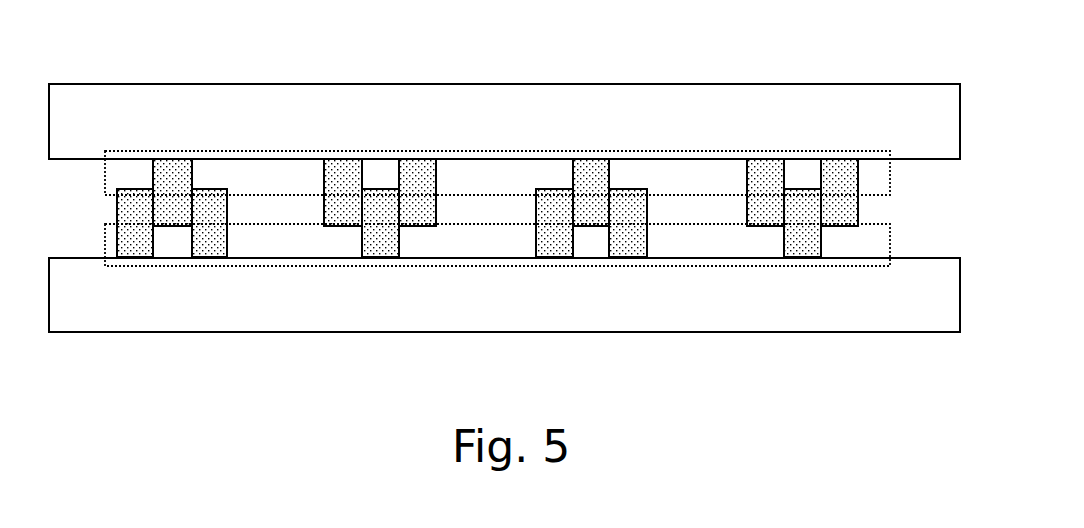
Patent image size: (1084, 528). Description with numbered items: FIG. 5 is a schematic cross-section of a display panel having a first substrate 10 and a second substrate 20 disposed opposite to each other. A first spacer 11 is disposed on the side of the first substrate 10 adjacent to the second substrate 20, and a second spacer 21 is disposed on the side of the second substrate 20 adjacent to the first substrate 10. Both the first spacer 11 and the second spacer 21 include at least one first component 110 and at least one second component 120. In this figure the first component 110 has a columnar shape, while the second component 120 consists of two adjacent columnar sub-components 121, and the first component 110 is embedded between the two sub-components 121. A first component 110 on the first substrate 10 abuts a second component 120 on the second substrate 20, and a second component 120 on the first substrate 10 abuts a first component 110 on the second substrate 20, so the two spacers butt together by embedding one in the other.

The first substrate 10 is at (929, 306).
The second substrate 20 is at (929, 135).
The first spacer 11 is at (105, 242).
The second spacer 21 is at (891, 180).
The first component 110 is at (487, 208).
The second component 120 is at (527, 215).
The sub-component 121 is at (252, 365).